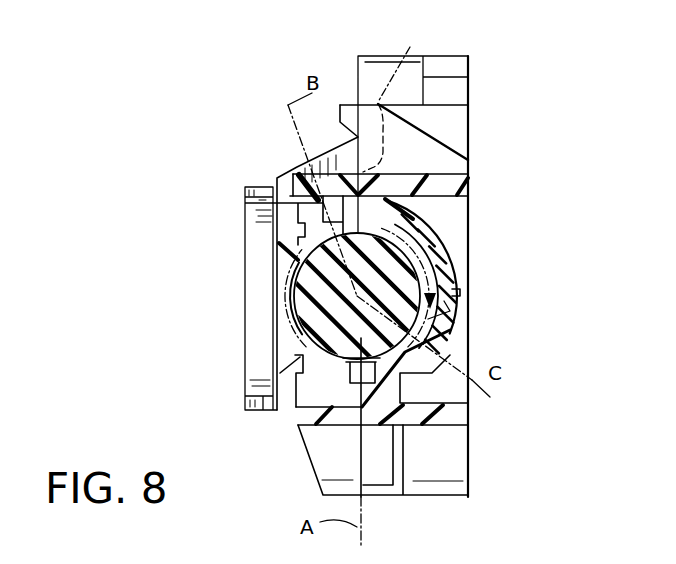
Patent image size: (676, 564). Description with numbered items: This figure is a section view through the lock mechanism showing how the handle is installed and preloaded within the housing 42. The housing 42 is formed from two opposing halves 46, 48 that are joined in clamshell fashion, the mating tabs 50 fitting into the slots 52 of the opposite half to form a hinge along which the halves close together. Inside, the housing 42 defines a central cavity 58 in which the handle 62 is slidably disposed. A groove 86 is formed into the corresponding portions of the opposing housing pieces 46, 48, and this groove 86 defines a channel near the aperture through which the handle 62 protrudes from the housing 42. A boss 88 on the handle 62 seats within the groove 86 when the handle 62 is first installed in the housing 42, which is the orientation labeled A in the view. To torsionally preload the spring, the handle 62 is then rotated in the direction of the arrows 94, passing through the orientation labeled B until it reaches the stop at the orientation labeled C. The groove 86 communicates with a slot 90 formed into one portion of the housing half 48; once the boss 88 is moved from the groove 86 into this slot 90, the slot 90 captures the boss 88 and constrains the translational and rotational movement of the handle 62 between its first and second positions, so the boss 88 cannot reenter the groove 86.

The housing 42 is at (296, 481).
The housing half 46 is at (238, 241).
The housing half 48 is at (476, 131).
The mating tab 50 is at (390, 99).
The slot 52 is at (432, 132).
The central cavity 58 is at (313, 375).
The handle 62 is at (300, 357).
The groove 86 is at (410, 205).
The boss 88 is at (245, 208).
The slot 90 is at (452, 291).
The arrows 94 is at (440, 242).